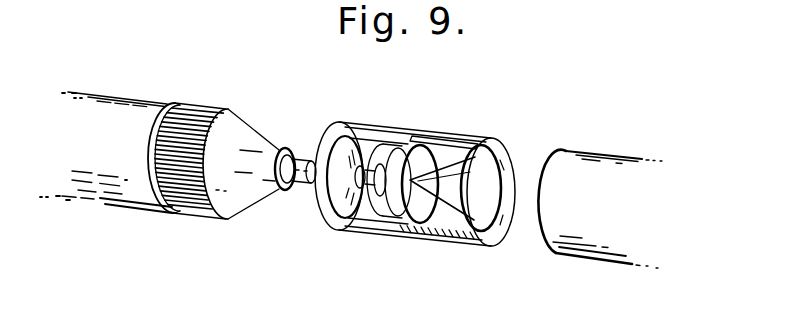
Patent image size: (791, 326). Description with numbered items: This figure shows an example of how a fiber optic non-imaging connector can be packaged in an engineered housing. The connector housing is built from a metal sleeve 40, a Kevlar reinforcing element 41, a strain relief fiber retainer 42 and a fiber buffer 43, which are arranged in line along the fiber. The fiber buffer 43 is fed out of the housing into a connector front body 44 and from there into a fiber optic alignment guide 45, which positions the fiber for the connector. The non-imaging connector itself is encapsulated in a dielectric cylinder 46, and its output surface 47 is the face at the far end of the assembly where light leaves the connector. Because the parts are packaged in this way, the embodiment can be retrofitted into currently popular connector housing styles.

The metal sleeve 40 is at (131, 147).
The Kevlar reinforcing element 41 is at (203, 107).
The strain relief fiber retainer 42 is at (228, 191).
The fiber buffer 43 is at (300, 192).
The connector front body 44 is at (360, 137).
The fiber optic alignment guide 45 is at (433, 128).
The dielectric cylinder 46 is at (428, 212).
The output surface 47 is at (487, 177).